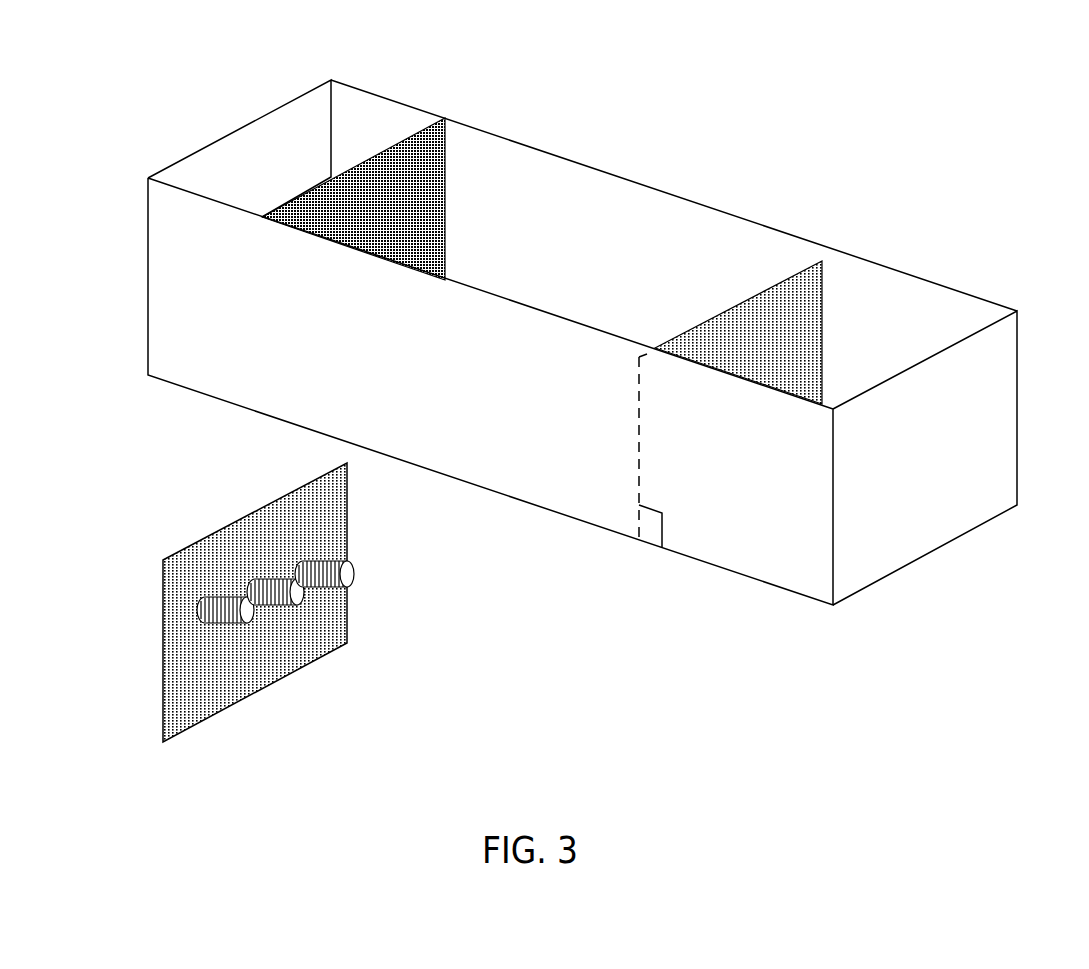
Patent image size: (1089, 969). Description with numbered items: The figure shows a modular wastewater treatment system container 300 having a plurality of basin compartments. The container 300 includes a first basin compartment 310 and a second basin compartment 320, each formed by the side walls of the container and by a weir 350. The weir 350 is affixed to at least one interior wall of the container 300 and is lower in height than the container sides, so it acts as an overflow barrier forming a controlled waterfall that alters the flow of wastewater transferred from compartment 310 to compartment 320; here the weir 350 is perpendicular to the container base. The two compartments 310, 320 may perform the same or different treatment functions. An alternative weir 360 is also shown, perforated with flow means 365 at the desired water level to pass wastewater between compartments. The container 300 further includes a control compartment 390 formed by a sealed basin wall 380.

The container 300 is at (163, 353).
The first basin compartment 310 is at (871, 325).
The second basin compartment 320 is at (544, 215).
The weir 350 is at (757, 293).
The alternative weir 360 is at (327, 632).
The flow means 365 is at (340, 562).
The sealed basin wall 380 is at (403, 138).
The control compartment 390 is at (292, 143).